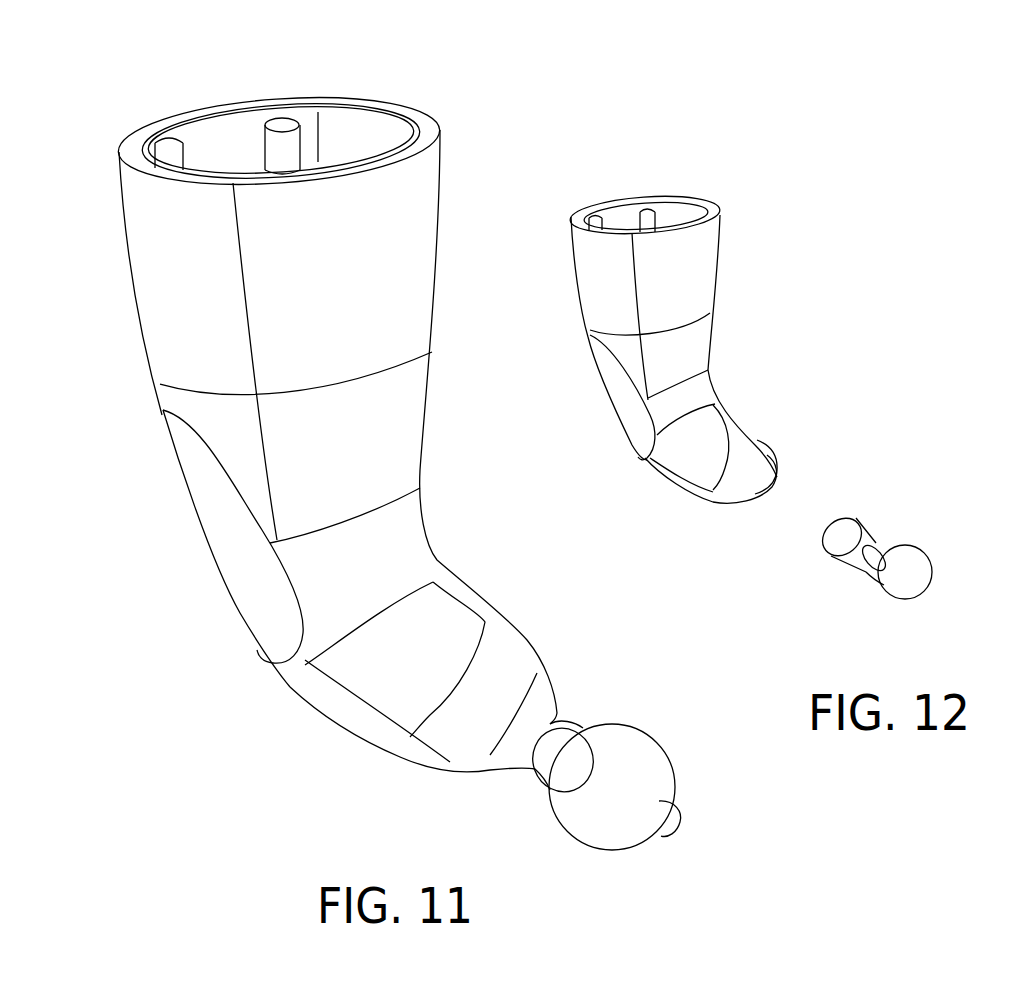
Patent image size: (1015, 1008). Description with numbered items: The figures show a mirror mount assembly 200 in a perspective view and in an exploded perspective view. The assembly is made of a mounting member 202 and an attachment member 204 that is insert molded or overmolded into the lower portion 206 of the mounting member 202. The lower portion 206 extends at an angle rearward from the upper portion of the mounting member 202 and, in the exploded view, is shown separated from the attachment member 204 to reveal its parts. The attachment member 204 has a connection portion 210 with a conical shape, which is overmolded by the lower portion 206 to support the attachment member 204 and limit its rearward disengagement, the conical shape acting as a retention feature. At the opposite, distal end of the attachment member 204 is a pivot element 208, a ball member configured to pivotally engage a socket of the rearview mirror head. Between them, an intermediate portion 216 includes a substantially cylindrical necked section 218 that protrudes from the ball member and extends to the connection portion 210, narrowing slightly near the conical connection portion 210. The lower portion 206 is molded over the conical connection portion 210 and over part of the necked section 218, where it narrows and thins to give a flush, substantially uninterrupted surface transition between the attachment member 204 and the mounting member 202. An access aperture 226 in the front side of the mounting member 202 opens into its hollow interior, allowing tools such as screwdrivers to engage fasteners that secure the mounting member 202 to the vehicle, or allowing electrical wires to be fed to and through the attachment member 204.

In FIG. 11, the mirror mount assembly 200 is at (397, 469).
In FIG. 12, the mirror mount assembly 200 is at (845, 405).
In FIG. 11, the mounting member 202 is at (336, 439).
In FIG. 12, the mounting member 202 is at (694, 347).
In FIG. 11, the attachment member 204 is at (623, 757).
In FIG. 12, the attachment member 204 is at (904, 554).
In FIG. 12, the lower portion 206 is at (760, 482).
In FIG. 12, the pivot element 208 is at (917, 563).
In FIG. 12, the connection portion 210 is at (858, 533).
In FIG. 12, the intermediate portion 216 is at (857, 580).
In FIG. 12, the necked section 218 is at (872, 552).
In FIG. 11, the access aperture 226 is at (243, 553).
In FIG. 12, the access aperture 226 is at (637, 408).